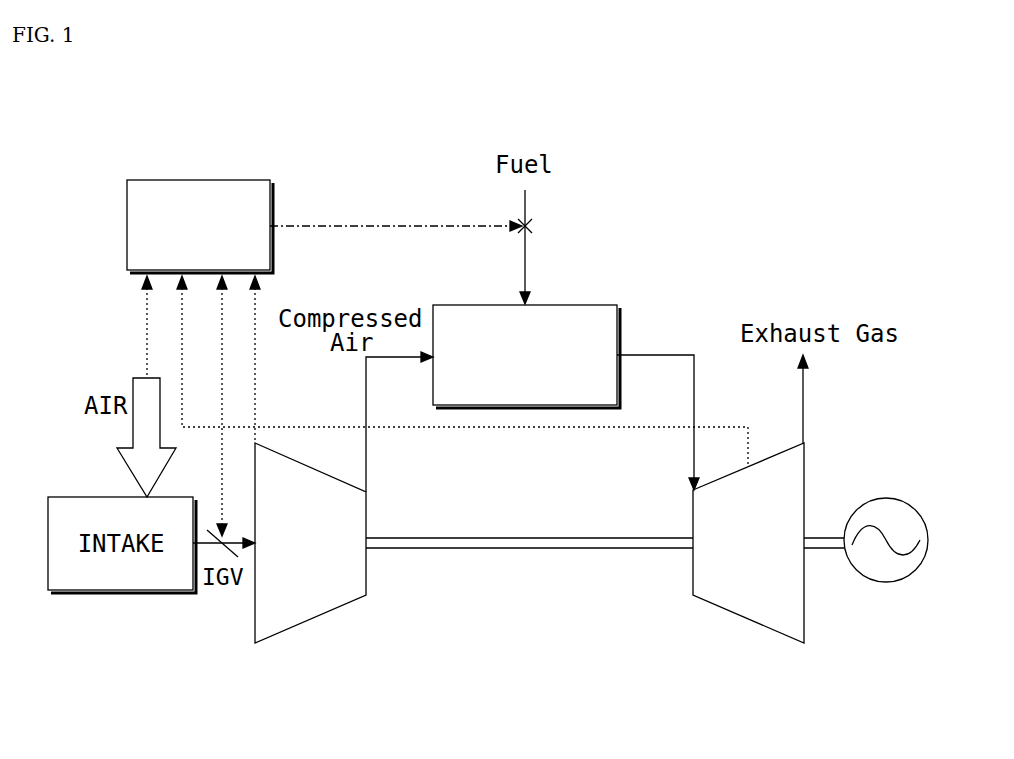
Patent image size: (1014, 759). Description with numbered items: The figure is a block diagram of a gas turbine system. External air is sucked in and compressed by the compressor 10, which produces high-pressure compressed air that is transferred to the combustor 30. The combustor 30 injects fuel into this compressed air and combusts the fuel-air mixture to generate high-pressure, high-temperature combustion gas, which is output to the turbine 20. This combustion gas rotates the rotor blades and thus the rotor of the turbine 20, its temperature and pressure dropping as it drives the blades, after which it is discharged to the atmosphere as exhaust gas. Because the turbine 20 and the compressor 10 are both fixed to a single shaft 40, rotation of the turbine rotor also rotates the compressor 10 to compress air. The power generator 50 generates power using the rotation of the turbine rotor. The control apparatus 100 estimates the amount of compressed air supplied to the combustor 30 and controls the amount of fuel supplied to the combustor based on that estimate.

The control apparatus 100 is at (127, 226).
The compressor 10 is at (311, 620).
The turbine 20 is at (748, 620).
The combustor 30 is at (433, 387).
The single shaft 40 is at (457, 550).
The power generator 50 is at (885, 583).